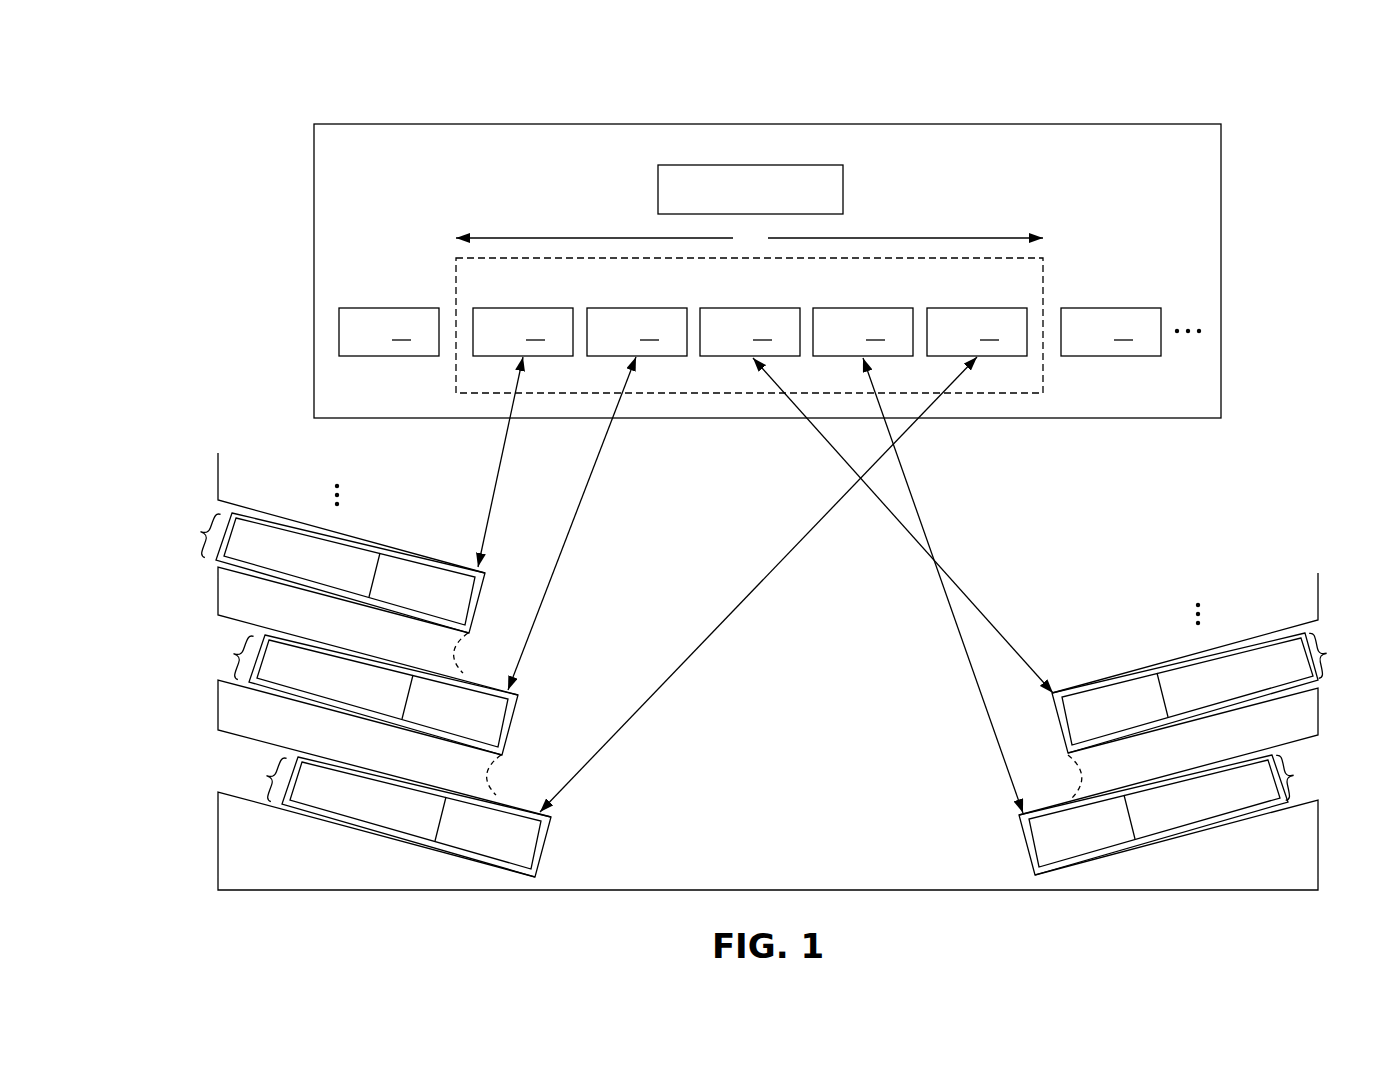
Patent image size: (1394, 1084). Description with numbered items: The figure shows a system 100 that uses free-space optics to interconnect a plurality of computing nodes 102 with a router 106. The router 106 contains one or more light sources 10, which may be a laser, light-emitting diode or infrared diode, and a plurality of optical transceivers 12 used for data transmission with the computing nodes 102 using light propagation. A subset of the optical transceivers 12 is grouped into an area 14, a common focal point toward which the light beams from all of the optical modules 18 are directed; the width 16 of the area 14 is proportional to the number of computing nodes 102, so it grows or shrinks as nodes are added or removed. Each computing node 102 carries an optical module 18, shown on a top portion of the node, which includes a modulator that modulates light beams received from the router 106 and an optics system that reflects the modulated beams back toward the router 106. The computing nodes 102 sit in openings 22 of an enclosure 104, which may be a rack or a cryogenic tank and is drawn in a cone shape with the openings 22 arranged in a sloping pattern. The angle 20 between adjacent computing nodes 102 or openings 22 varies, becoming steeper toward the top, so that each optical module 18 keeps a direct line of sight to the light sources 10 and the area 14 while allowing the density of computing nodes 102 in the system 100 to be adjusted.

The system 100 is at (1206, 80).
The router 106 is at (813, 152).
The light sources 10 is at (820, 198).
The width of the area 16 is at (749, 238).
The area 14 is at (781, 287).
The optical transceivers 12 is at (770, 332).
The computing nodes 102 is at (767, 695).
The optical modules 18 is at (768, 699).
The angle 20 is at (449, 653).
The openings 22 is at (201, 531).
The enclosure 104 is at (357, 892).